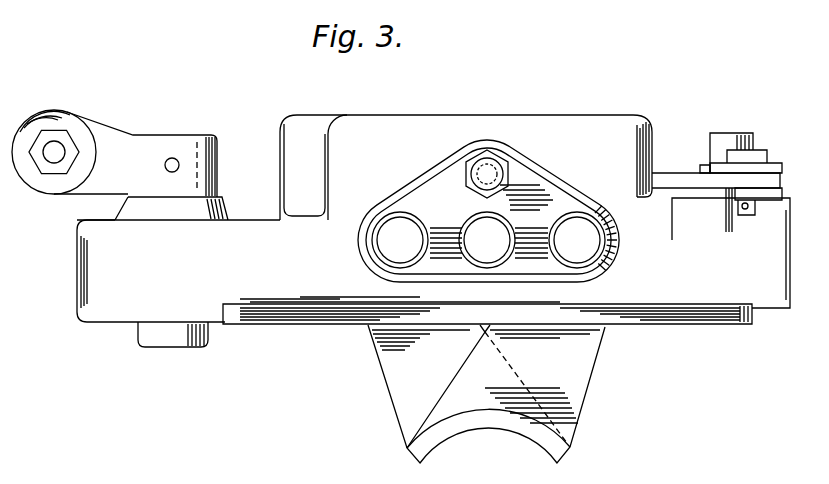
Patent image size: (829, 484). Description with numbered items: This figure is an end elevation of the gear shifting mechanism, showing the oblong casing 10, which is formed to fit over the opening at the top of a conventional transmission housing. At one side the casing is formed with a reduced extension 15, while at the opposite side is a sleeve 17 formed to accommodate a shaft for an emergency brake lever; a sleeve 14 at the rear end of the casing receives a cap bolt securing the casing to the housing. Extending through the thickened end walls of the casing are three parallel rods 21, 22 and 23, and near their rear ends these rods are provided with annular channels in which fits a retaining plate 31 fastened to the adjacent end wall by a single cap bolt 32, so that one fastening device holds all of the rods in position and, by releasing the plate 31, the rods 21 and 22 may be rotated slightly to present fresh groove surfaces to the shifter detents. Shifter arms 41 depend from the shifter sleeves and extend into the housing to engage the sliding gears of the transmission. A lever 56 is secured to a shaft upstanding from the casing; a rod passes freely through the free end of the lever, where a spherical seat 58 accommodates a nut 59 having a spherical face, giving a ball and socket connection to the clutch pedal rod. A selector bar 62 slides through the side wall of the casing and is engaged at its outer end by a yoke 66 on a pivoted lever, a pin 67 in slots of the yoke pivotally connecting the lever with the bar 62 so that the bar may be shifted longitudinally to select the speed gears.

The casing 10 is at (634, 116).
The sleeve 14 is at (731, 253).
The reduced extension 15 is at (414, 283).
The sleeve 17 is at (769, 255).
The rod 21 is at (592, 256).
The rod 22 is at (388, 245).
The rod 23 is at (497, 243).
The retaining plate 31 is at (560, 196).
The cap bolt 32 is at (498, 173).
The shifter arm 41 is at (486, 394).
The lever 56 is at (113, 130).
The spherical seat 58 is at (78, 120).
The nut 59 is at (53, 129).
The selector bar 62 is at (668, 176).
The yoke 66 is at (773, 165).
The pin 67 is at (758, 151).